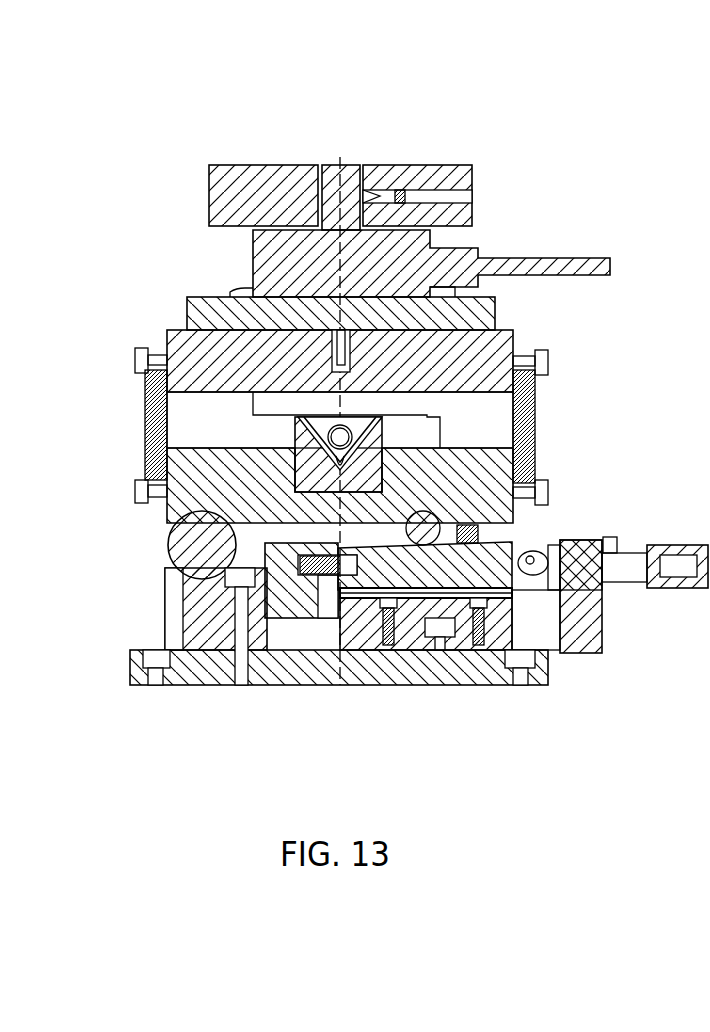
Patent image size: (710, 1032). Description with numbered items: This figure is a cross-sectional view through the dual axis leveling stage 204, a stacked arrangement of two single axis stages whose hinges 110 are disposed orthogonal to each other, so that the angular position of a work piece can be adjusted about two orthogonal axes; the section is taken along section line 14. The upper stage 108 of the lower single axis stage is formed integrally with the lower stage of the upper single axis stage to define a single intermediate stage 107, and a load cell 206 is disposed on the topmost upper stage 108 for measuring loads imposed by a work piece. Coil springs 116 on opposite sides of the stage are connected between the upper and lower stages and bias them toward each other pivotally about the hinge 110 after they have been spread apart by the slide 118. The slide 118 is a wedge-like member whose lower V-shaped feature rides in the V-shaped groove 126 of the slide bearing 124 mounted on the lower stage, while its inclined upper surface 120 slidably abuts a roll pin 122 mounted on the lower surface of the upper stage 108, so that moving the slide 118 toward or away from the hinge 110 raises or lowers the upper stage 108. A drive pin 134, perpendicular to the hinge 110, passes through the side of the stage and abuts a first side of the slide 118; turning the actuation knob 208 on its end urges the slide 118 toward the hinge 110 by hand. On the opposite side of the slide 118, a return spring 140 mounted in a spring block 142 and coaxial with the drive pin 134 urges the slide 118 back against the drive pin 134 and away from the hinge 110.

The section line 14- 14 is at (340, 157).
The dual axis leveling stage 204 is at (488, 112).
The load cell 206 is at (462, 250).
The upper stage 108 is at (507, 343).
The springs 116 is at (535, 393).
The roll pin 122 is at (427, 403).
The V-shaped groove 126 is at (442, 448).
The intermediate stage 107 is at (507, 513).
The spring block 142 is at (305, 453).
The return spring 140 is at (352, 440).
The hinge 110 is at (182, 555).
The upper surface of the slide 120 is at (395, 545).
The slide 118 is at (488, 550).
The slide bearing 124 is at (414, 612).
The drive pin 134 is at (632, 575).
The actuation knob 208 is at (683, 550).